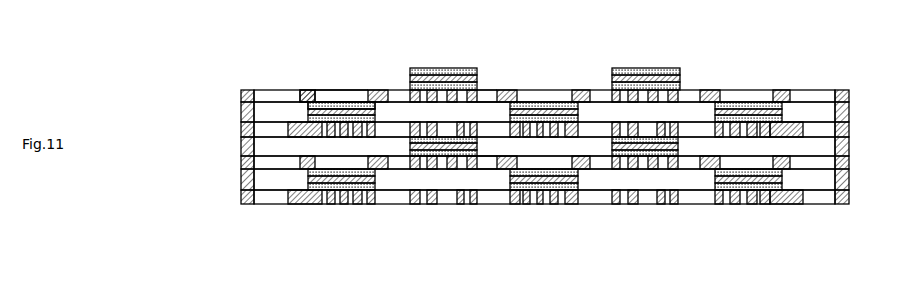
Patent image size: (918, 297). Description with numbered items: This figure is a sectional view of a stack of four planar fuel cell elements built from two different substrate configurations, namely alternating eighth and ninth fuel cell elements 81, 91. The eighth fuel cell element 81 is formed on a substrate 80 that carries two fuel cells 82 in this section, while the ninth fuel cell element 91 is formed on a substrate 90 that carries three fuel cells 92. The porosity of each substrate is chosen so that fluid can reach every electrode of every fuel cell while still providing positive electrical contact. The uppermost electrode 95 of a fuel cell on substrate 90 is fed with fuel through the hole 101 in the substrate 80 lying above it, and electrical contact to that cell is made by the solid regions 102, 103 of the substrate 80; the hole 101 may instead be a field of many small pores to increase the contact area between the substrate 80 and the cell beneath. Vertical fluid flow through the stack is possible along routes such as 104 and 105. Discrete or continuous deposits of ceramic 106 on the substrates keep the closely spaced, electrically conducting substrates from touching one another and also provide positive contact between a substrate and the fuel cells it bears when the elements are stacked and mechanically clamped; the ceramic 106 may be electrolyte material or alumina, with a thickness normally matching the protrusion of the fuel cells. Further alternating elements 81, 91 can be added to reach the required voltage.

The substrate 80 is at (241, 93).
The eighth fuel cell element 81 is at (820, 85).
The fuel cells 82 is at (440, 67).
The substrate 90 is at (241, 128).
The ninth fuel cell element 91 is at (850, 133).
The fuel cells 92 is at (302, 113).
The uppermost electrode 95 is at (330, 103).
The hole 101 is at (347, 97).
The solid region 102 is at (378, 90).
The solid region 103 is at (307, 90).
The vertical fluid flow route 104 is at (487, 92).
The vertical fluid flow route 105 is at (502, 93).
The ceramic deposit 106 is at (241, 112).